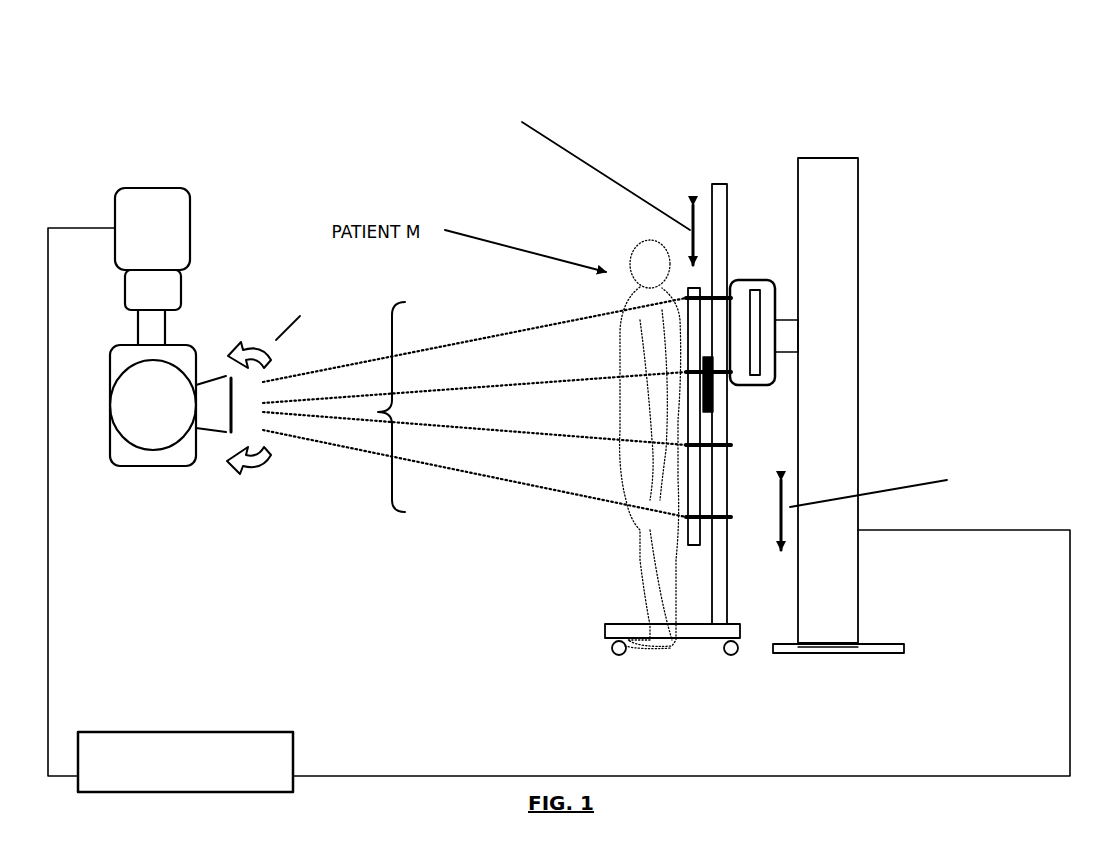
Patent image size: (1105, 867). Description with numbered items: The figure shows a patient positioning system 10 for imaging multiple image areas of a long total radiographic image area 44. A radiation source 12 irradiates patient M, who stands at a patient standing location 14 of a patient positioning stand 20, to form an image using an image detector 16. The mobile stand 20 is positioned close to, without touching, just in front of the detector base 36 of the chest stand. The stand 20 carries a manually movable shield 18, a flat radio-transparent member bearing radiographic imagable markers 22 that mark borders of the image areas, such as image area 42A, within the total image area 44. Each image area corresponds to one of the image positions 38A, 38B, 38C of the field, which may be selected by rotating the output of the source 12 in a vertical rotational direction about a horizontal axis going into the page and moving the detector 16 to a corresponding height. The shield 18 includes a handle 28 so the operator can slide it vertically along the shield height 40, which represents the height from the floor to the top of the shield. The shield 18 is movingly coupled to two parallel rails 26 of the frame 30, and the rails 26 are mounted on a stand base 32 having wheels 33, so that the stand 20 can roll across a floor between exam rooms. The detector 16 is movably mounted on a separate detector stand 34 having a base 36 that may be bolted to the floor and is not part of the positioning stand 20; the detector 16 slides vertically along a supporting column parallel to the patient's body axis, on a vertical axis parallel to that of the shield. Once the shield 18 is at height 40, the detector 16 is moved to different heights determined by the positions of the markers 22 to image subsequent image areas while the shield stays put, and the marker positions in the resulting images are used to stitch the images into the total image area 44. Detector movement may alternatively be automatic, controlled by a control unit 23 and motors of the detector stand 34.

The patient positioning system 10 is at (940, 87).
The radiation source 12 is at (152, 467).
The patient standing location 14 is at (580, 655).
The image detector 16 is at (908, 300).
The shield 18 is at (727, 213).
The patient positioning stand 20 is at (778, 401).
The radiographic imagable markers 22 is at (686, 372).
The control unit 23 is at (185, 762).
The rails 26 is at (720, 460).
The handle 28 is at (713, 408).
The frame 30 is at (725, 185).
The stand base 32 is at (700, 633).
The wheels 33 is at (731, 655).
The detector stand 34 is at (858, 158).
The detector base 36 is at (900, 643).
The image position 38A is at (490, 500).
The image position 38B is at (490, 500).
The image position 38C is at (490, 500).
The shield height 40 is at (684, 289).
The image area 42A is at (752, 336).
The total image area 44 is at (373, 410).